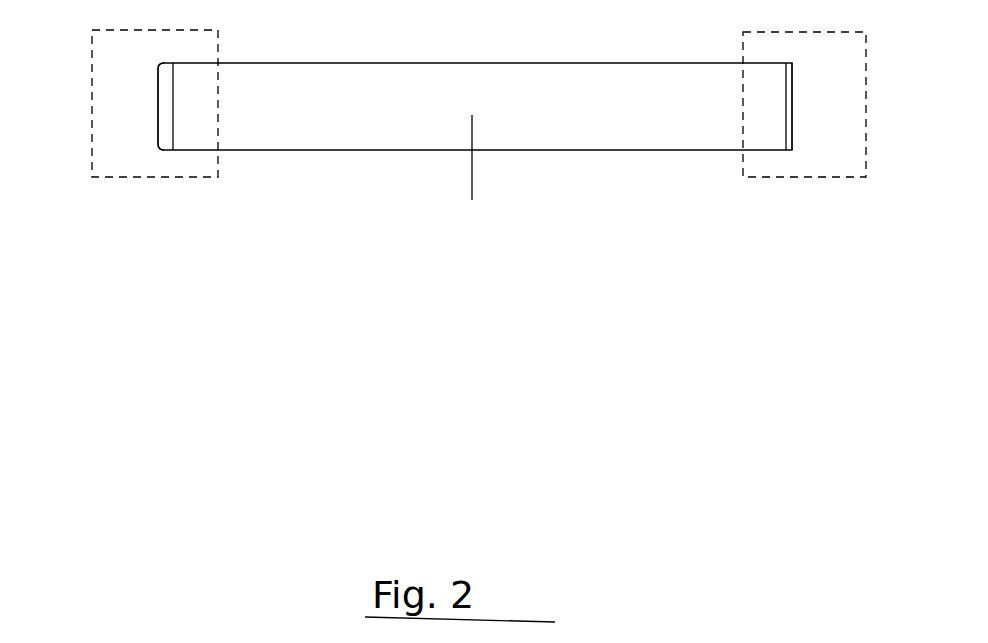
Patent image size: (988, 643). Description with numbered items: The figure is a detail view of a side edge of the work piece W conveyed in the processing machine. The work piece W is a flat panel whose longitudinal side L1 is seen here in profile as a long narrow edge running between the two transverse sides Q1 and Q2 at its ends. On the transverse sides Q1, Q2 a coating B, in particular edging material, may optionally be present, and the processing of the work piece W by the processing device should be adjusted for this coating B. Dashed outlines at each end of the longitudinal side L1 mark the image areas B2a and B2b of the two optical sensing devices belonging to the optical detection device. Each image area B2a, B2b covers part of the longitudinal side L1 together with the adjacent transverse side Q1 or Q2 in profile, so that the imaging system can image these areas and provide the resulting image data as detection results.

The longitudinal side L1 is at (553, 117).
The coating B is at (143, 116).
The transverse side Q2 is at (147, 75).
The transverse side Q1 is at (803, 81).
The image area B2b is at (155, 121).
The image area B2a is at (804, 122).
The work piece W is at (463, 177).